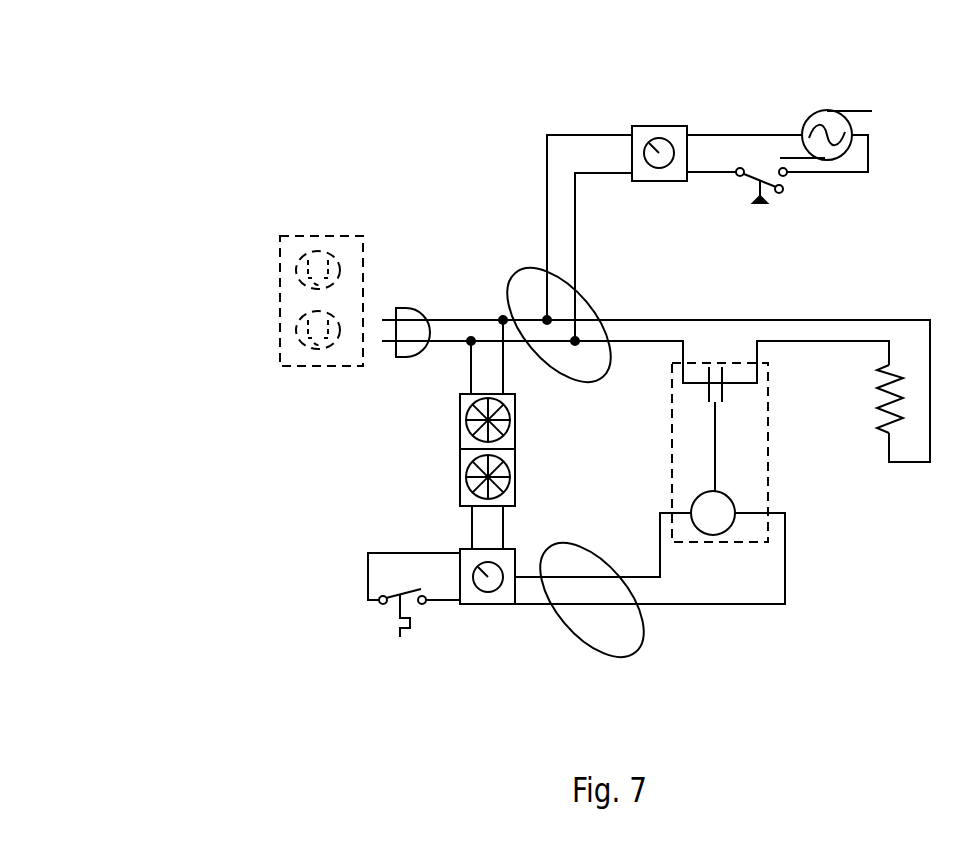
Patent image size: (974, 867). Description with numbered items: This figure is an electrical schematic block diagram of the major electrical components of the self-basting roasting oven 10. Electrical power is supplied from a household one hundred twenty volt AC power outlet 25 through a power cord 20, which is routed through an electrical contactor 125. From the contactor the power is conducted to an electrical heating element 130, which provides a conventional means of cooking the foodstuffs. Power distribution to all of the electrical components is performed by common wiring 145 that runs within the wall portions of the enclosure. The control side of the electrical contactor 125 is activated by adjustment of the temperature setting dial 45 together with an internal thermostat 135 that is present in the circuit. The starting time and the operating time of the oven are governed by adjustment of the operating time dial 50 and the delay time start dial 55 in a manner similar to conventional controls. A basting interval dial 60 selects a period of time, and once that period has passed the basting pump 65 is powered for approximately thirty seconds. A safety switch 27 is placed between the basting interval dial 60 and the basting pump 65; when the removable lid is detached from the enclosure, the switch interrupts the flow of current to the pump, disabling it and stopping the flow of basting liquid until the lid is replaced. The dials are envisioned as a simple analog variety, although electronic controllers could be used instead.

The self-basting roasting oven 10 is at (112, 118).
The power outlet 25 is at (278, 293).
The power cord 20 is at (405, 360).
The delay time start dial 55 is at (460, 414).
The operating time dial 50 is at (460, 478).
The temperature setting dial 45 is at (515, 549).
The internal thermostat 135 is at (413, 628).
The common wiring 145 is at (515, 272).
The basting interval dial 60 is at (655, 183).
The basting pump 65 is at (850, 125).
The safety switch 27 is at (783, 193).
The electrical contactor 125 is at (672, 426).
The electrical heating element 130 is at (885, 425).